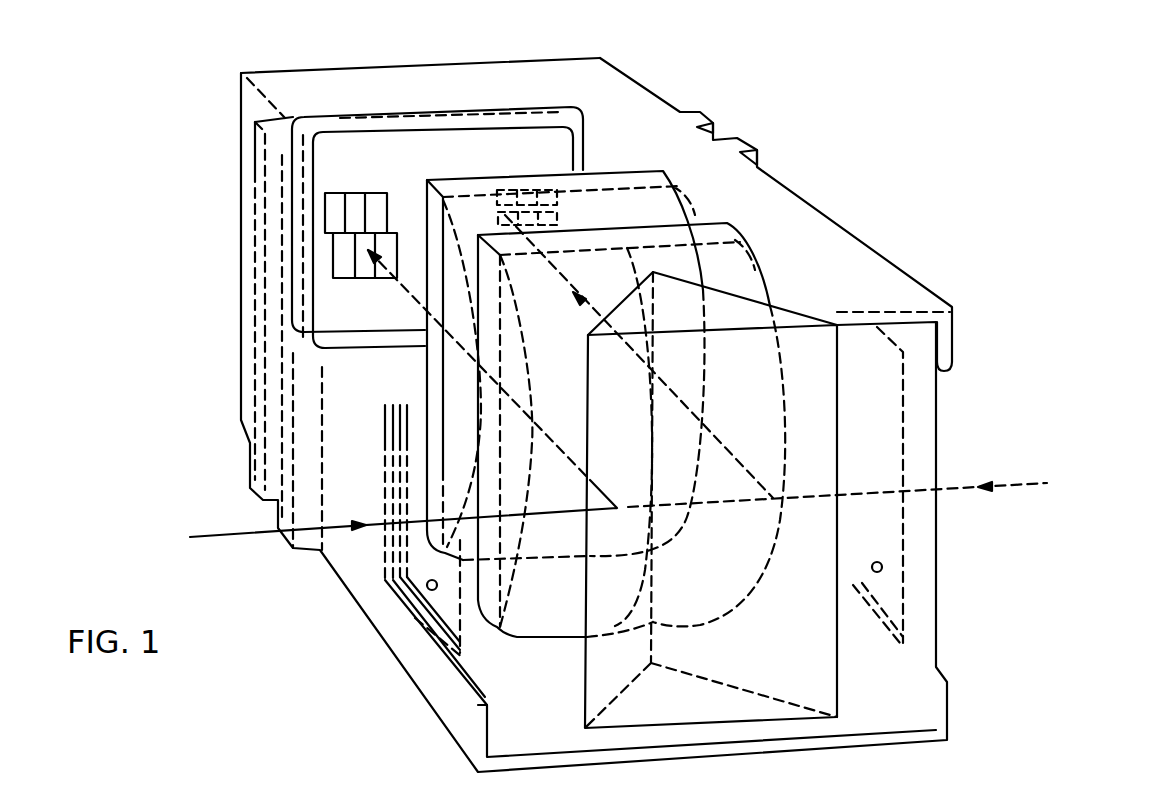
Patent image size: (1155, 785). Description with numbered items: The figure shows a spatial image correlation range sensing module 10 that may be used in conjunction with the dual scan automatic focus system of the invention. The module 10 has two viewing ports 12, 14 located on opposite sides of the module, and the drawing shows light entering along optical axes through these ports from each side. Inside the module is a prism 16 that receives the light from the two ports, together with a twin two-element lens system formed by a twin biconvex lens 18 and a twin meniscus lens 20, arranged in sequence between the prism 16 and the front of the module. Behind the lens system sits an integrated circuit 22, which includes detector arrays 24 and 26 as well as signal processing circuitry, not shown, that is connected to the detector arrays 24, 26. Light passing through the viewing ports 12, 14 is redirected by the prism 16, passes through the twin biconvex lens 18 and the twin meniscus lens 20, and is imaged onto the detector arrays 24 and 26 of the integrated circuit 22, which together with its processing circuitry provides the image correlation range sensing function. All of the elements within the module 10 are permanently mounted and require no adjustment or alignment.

The module 10 is at (185, 294).
The viewing port 12 is at (884, 570).
The viewing port 14 is at (428, 590).
The prism 16 is at (800, 310).
The twin biconvex lens 18 is at (735, 227).
The twin meniscus lens 20 is at (667, 173).
The integrated circuit 22 is at (393, 100).
The detector array 24 is at (520, 180).
The detector array 26 is at (345, 193).